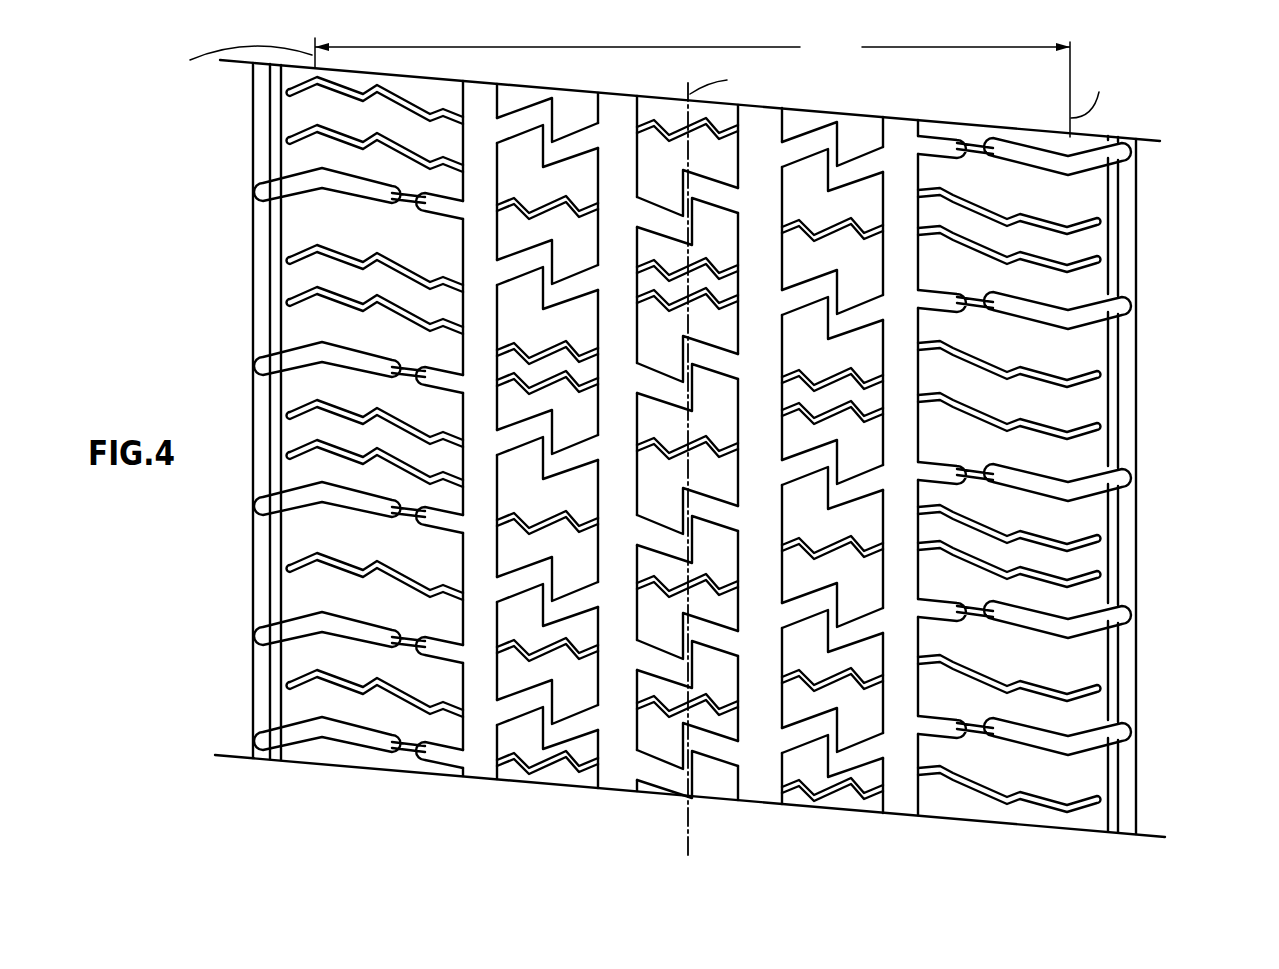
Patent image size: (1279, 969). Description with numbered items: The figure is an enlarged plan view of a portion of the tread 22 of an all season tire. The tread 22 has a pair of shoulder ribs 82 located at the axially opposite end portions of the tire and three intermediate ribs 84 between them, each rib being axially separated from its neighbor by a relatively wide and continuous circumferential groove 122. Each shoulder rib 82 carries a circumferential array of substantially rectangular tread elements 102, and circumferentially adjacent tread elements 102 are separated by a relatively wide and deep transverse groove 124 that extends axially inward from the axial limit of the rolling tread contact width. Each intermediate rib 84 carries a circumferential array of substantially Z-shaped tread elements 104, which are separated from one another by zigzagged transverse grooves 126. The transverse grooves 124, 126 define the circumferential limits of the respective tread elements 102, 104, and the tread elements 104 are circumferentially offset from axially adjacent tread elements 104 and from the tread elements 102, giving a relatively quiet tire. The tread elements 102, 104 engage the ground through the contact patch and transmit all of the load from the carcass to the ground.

The tread 22 is at (1140, 135).
The shoulder rib 82 is at (335, 773).
The intermediate rib 84 is at (528, 790).
The tread element 102 is at (317, 208).
The tread element 104 is at (507, 773).
The circumferential groove 122 is at (481, 97).
The transverse groove 124 is at (337, 180).
The transverse groove 126 is at (523, 120).